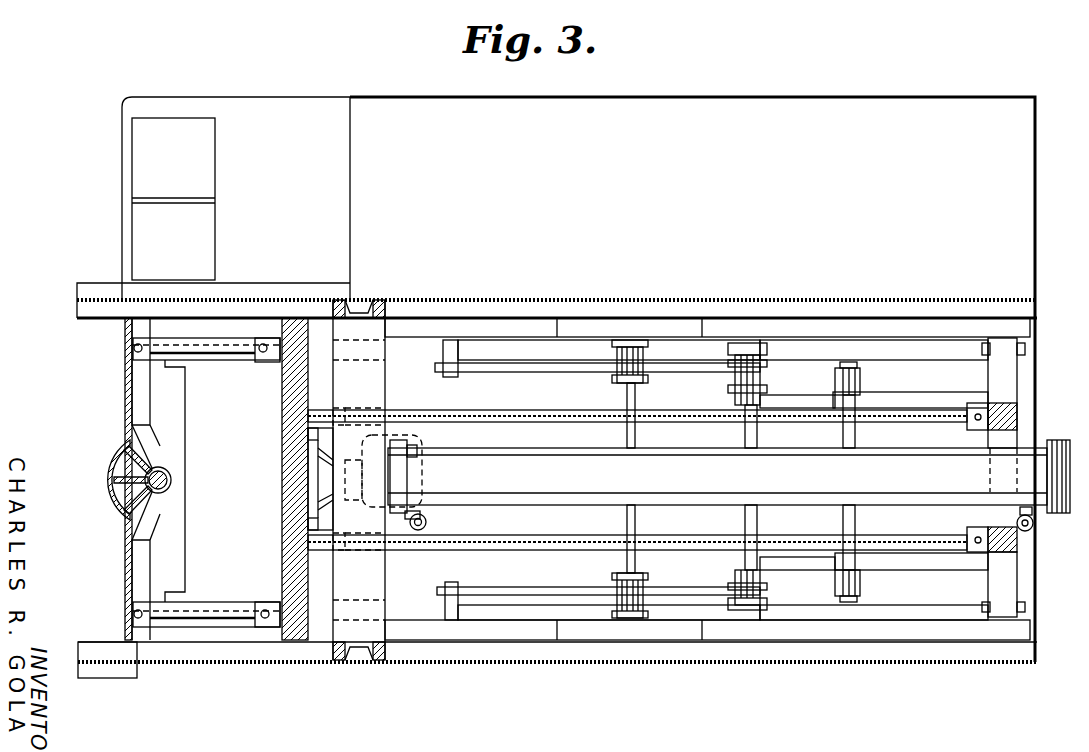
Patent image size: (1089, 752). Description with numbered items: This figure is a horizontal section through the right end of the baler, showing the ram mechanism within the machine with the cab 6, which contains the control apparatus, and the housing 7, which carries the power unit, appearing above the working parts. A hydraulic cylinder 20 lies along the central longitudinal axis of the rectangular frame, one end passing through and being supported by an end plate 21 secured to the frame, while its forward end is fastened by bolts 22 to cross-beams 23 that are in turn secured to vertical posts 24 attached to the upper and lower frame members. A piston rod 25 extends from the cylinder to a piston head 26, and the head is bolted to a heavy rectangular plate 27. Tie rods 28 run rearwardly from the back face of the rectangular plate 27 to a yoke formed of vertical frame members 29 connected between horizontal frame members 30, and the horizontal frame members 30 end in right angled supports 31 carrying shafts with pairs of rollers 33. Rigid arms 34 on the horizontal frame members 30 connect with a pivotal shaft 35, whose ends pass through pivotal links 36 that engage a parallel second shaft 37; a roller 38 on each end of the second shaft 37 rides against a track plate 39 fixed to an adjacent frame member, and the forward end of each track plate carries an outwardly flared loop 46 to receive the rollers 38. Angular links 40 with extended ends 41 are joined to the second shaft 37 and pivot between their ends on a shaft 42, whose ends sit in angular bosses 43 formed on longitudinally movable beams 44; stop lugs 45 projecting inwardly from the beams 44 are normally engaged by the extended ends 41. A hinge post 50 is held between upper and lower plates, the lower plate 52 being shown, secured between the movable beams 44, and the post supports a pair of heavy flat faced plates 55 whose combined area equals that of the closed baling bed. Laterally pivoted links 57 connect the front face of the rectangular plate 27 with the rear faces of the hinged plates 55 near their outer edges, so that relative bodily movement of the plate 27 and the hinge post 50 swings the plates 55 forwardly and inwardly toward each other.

The cab 6 is at (352, 178).
The housing 7 is at (692, 379).
The hydraulic cylinder 20 is at (510, 450).
The end plate 21 is at (1037, 318).
The bolts 22 is at (418, 530).
The cross-beams 23 is at (375, 402).
The vertical posts 24 is at (345, 307).
The piston rod 25 is at (407, 437).
The piston head 26 is at (300, 520).
The rectangular plate 27 is at (290, 480).
The tie rods 28 is at (565, 412).
The vertical frame members 29 is at (1017, 416).
The horizontal frame members 30 is at (990, 445).
The right angled supports 31 is at (1005, 380).
The rollers 33 is at (1025, 350).
The rigid arms 34 is at (907, 398).
The pivotal shaft 35 is at (860, 437).
The pivotal links 36 is at (805, 395).
The second shaft 37 is at (758, 437).
The rollers 38 is at (767, 350).
The track plates 39 is at (930, 350).
The angular links 40 is at (688, 368).
The extended ends 41 is at (518, 372).
The shaft 42 is at (642, 437).
The angular boss 43 is at (600, 340).
The longitudinally movable beams 44 is at (517, 330).
The stop lugs 45 is at (449, 340).
The outwardly flared loop 46 is at (131, 336).
The hinge post 50 is at (170, 478).
The lower plate 52 is at (170, 422).
The flat faced plates 55 is at (128, 372).
The laterally pivoted links 57 is at (222, 352).